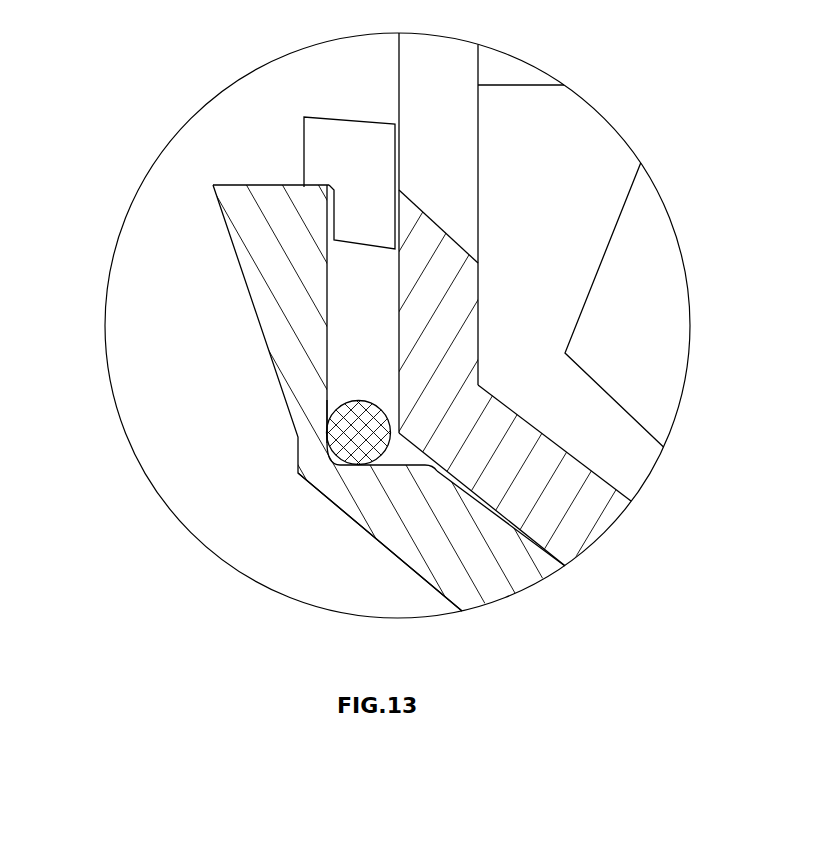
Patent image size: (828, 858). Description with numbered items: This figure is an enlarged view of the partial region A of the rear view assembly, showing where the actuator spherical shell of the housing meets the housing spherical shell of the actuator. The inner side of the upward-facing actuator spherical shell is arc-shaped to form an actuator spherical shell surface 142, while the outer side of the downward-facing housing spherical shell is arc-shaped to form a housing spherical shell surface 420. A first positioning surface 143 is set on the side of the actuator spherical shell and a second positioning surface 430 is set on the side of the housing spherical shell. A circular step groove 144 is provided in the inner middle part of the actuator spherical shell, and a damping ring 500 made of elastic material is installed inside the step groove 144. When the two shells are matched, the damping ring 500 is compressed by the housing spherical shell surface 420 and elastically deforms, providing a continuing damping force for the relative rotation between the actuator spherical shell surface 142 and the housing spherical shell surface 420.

The partial view A is at (586, 102).
The first positioning surface 143 is at (395, 162).
The second positioning surface 430 is at (397, 284).
The housing spherical shell surface 420 is at (442, 475).
The actuator spherical shell surface 142 is at (510, 532).
The step groove 144 is at (325, 452).
The damping ring 500 is at (337, 423).